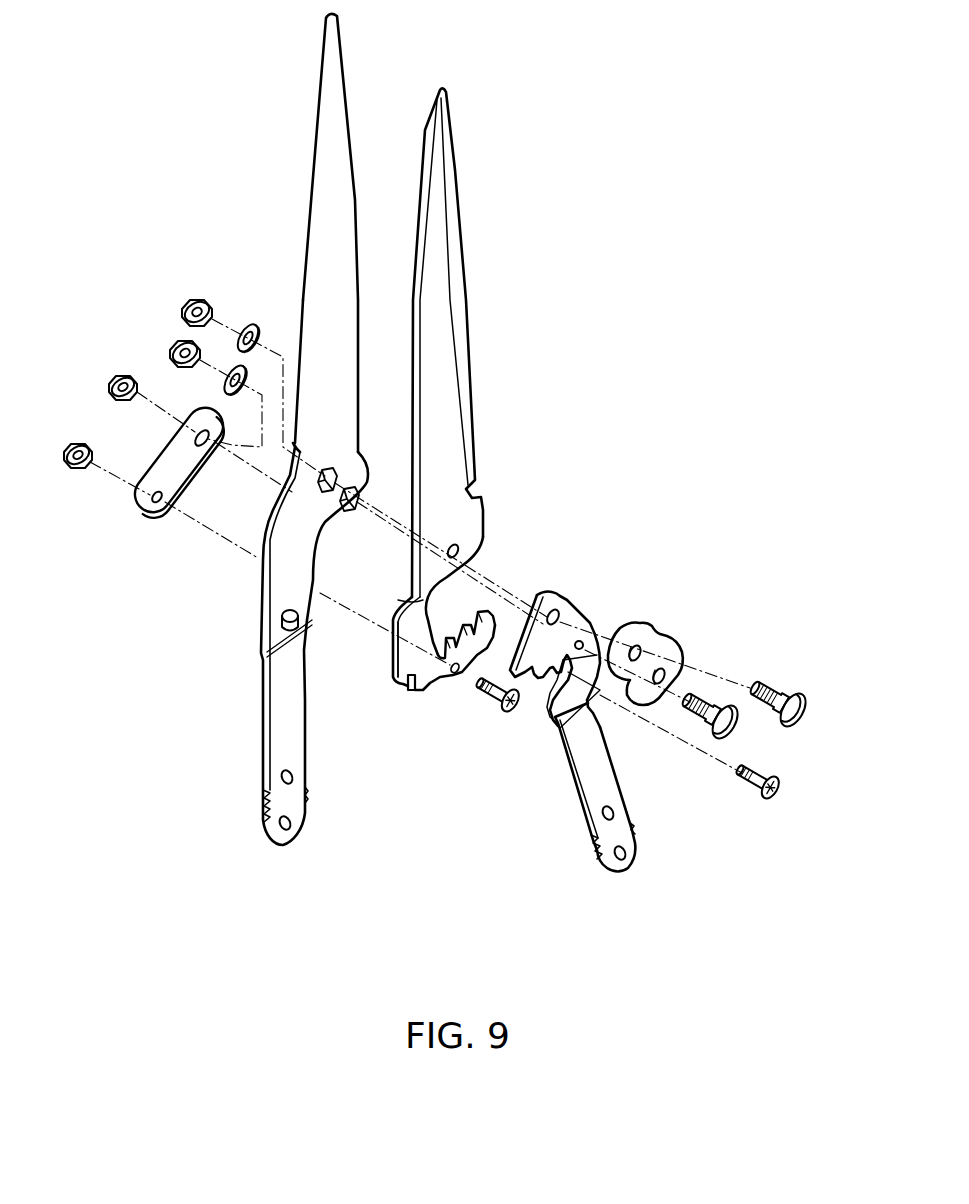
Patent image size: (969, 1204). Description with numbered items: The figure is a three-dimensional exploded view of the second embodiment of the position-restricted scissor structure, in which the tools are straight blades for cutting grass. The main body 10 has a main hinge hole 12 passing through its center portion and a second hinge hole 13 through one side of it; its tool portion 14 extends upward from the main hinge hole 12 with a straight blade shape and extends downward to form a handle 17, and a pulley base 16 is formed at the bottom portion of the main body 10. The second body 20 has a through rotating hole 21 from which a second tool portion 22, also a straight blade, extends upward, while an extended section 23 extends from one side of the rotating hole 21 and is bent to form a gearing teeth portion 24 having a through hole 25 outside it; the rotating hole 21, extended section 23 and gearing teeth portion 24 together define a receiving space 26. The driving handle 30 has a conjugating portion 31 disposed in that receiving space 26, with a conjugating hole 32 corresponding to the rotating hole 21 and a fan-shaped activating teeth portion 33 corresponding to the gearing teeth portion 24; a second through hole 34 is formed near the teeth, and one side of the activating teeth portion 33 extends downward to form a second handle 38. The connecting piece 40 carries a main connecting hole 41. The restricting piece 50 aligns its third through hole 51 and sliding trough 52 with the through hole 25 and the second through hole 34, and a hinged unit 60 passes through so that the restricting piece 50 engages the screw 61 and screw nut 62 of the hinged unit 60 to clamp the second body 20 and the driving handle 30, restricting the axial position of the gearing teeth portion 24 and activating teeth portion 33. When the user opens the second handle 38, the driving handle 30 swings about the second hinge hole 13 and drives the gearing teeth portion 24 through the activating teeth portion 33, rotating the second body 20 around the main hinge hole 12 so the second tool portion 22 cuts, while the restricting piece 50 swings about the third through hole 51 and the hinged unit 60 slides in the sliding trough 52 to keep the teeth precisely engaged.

The main body 10 is at (277, 590).
The main hinge hole 12 is at (332, 472).
The second hinge hole 13 is at (352, 493).
The tool portion 14 is at (328, 198).
The pulley base 16 is at (278, 623).
The handle 17 is at (292, 732).
The second body 20 is at (480, 513).
The rotating hole 21 is at (463, 550).
The second tool portion 22 is at (447, 217).
The extended section 23 is at (413, 650).
The gearing teeth portion 24 is at (475, 620).
The through hole 25 is at (415, 690).
The receiving space 26 is at (428, 612).
The driving handle 30 is at (577, 795).
The conjugating portion 31 is at (598, 690).
The conjugating hole 32 is at (553, 595).
The activating teeth portion 33 is at (530, 677).
The second through hole 34 is at (582, 642).
The second handle 38 is at (603, 768).
The connecting piece 40 is at (657, 635).
The main connecting hole 41 is at (632, 647).
The restricting piece 50 is at (173, 457).
The third through hole 51 is at (155, 497).
The sliding trough 52 is at (200, 437).
The hinged unit 60 is at (497, 703).
The screw 61 is at (514, 712).
The screw nut 62 is at (117, 380).